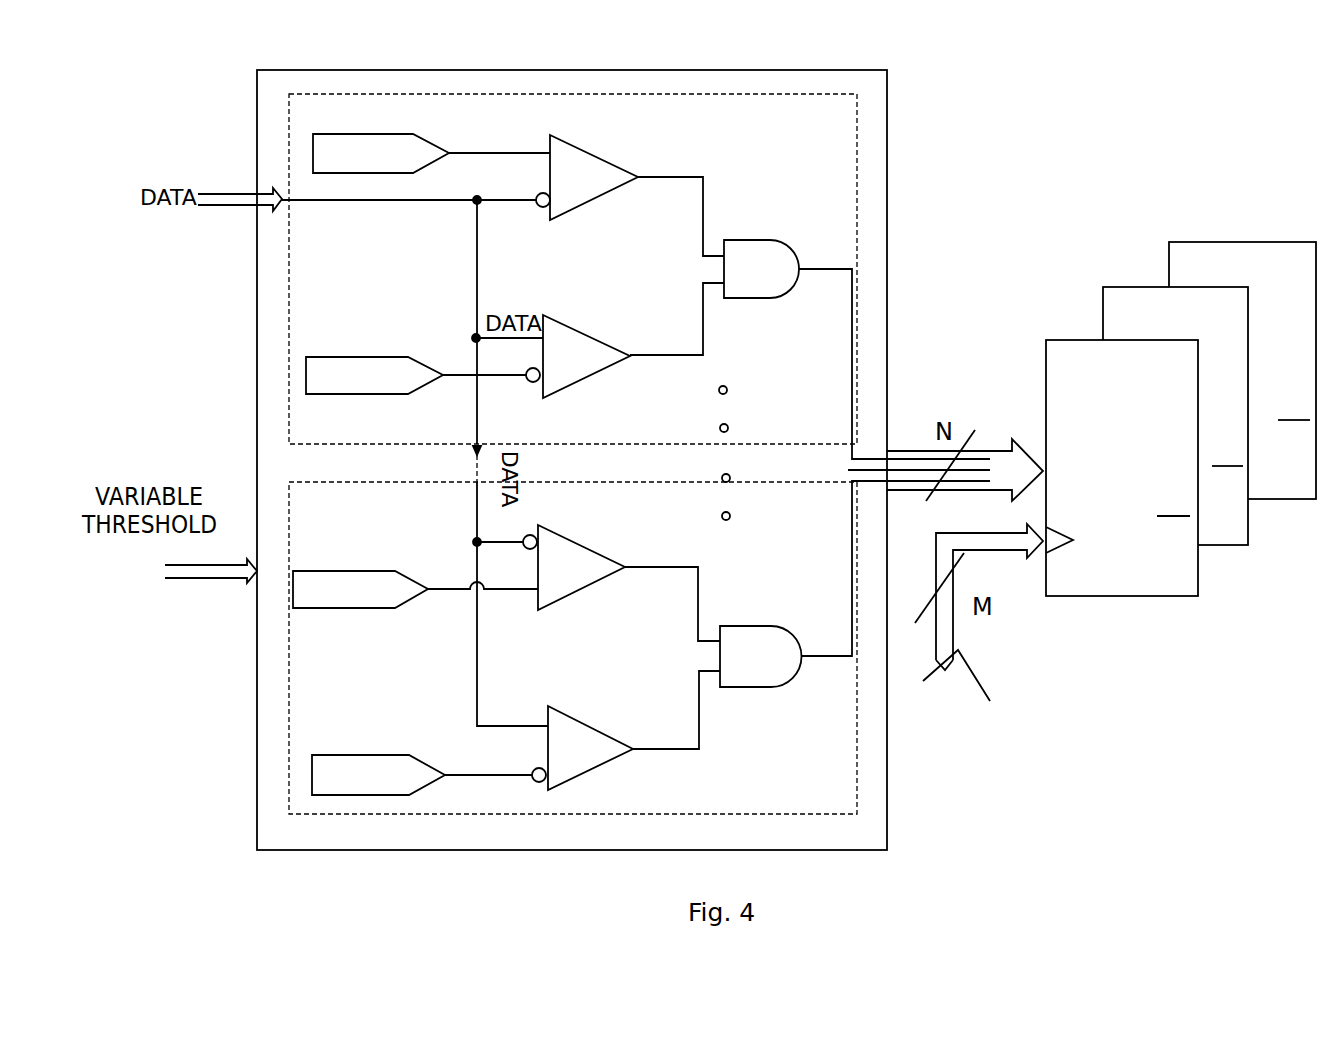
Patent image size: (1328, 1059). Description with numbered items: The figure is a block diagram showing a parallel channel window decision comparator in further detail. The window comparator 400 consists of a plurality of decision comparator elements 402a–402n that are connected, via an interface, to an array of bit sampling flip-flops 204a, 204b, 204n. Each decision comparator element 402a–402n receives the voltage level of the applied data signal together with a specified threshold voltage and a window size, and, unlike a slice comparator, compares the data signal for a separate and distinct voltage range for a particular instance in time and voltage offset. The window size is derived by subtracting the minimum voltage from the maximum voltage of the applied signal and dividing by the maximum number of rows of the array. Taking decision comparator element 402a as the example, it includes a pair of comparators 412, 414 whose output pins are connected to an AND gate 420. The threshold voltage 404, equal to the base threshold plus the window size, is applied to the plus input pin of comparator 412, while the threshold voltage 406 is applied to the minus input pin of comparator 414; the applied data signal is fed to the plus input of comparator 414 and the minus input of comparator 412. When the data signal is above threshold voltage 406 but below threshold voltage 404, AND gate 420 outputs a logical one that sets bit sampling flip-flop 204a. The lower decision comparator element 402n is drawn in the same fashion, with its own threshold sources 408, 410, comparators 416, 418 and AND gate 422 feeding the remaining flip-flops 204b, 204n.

The window comparator 400 is at (387, 67).
The decision comparator element 402a is at (289, 332).
The decision comparator element 402n is at (289, 667).
The threshold voltage (V1+ΔV) 404 is at (380, 131).
The threshold voltage (V1) 406 is at (392, 354).
The upper threshold voltage source VN+ΔV 408 is at (368, 568).
The lower threshold voltage source VN 410 is at (373, 752).
The comparator 412 is at (587, 148).
The comparator 414 is at (580, 323).
The comparator 416 is at (577, 540).
The comparator 418 is at (585, 718).
The AND gate 420 is at (755, 237).
The AND gate 422 is at (750, 624).
The bit sampling flip-flop 204a is at (1060, 337).
The bit sampling flip-flop 204b is at (1148, 284).
The bit sampling flip-flop 204n is at (1238, 239).